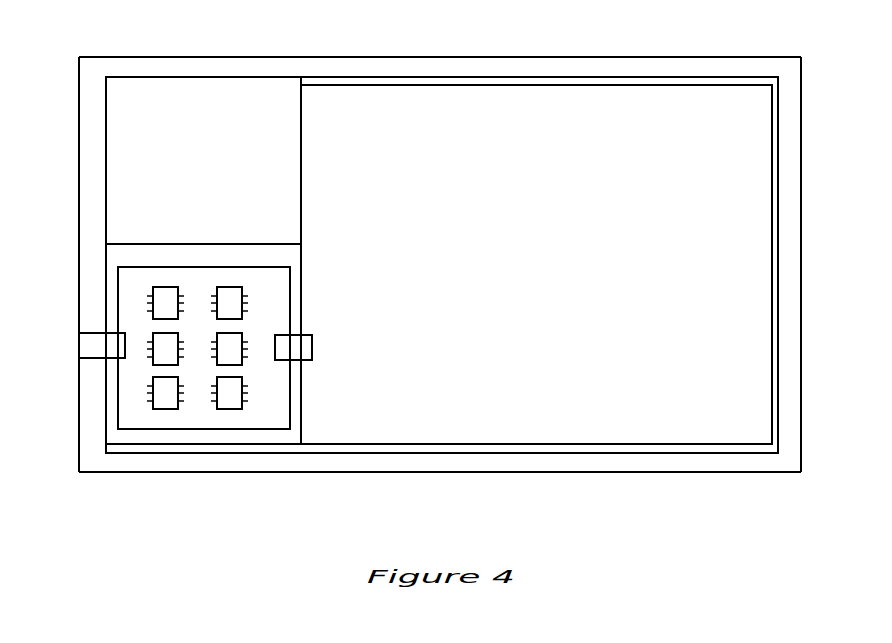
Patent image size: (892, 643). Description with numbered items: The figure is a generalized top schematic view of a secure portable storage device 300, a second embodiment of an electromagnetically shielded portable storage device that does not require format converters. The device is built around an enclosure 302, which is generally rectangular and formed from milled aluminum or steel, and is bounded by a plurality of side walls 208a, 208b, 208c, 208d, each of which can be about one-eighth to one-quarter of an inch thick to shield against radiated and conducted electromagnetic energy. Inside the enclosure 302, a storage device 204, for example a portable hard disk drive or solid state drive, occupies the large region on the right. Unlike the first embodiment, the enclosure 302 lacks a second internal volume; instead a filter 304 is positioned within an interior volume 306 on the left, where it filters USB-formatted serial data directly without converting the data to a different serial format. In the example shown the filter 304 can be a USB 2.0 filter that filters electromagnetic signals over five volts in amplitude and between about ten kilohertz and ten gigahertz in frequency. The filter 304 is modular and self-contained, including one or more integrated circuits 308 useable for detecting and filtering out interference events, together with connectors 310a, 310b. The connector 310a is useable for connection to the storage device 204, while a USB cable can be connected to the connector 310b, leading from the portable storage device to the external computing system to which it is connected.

The secure portable storage device 300 is at (156, 547).
The enclosure 302 is at (326, 494).
The storage device 204 is at (720, 193).
The side wall 208a is at (480, 72).
The side wall 208b is at (558, 463).
The side wall 208c is at (785, 287).
The side wall 208d is at (89, 218).
The filter 304 is at (240, 230).
The interior volume 306 is at (222, 153).
The integrated circuits 308 is at (242, 400).
The connector 310a is at (303, 335).
The connector 310b is at (88, 352).